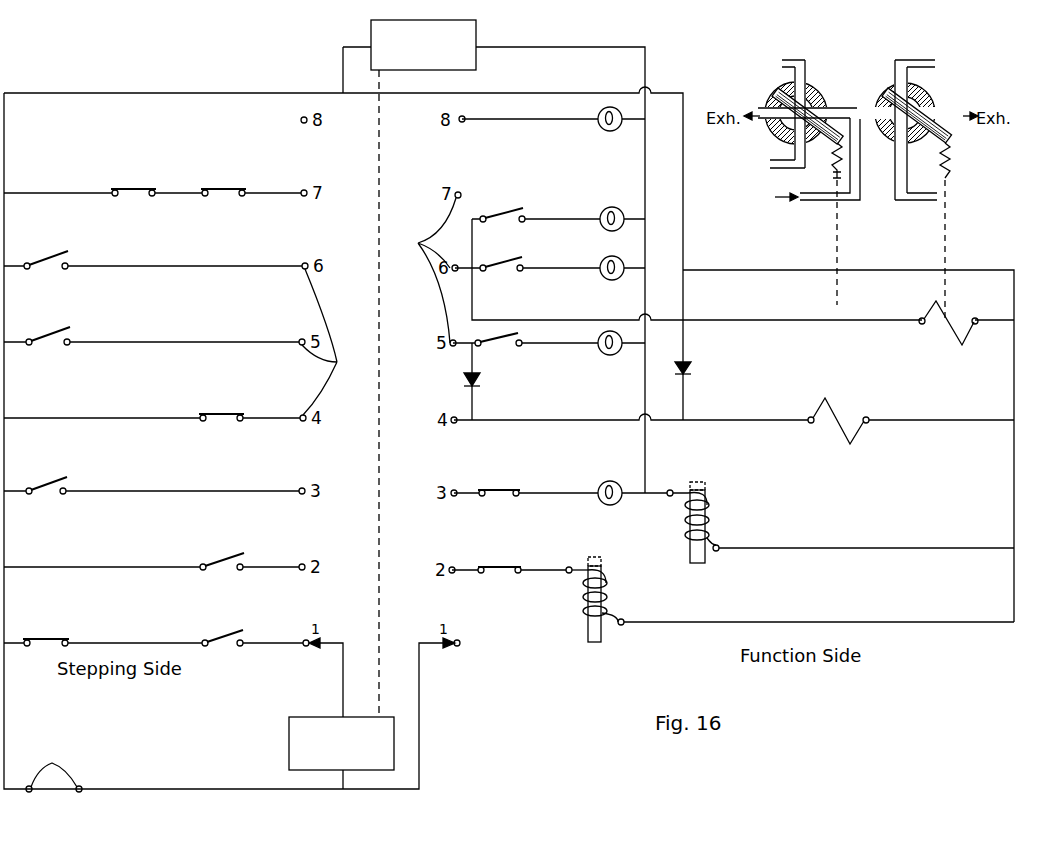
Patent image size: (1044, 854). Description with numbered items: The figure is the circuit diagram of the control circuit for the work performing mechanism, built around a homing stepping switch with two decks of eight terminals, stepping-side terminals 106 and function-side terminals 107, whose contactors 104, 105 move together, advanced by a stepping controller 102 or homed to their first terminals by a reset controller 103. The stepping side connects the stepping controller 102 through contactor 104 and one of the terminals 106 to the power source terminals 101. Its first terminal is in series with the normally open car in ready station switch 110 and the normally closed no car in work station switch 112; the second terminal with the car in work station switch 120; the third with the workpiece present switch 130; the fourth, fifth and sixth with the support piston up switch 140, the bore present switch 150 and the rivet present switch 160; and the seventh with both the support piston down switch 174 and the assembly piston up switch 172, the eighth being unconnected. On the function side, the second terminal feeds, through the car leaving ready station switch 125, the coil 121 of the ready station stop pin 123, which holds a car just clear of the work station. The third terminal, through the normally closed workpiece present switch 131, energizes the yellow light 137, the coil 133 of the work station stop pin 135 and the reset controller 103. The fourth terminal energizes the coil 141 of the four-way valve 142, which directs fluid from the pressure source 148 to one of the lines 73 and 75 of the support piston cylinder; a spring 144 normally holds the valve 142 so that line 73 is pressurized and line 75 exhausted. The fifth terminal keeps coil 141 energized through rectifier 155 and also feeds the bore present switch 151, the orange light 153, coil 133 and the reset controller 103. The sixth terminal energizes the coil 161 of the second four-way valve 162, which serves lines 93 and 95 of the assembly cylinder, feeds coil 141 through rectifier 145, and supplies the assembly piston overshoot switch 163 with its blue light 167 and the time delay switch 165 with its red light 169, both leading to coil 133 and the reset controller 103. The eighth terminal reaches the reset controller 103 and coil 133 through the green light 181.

The line 73 is at (782, 66).
The line 75 is at (775, 166).
The line 93 is at (935, 66).
The line 95 is at (937, 197).
The terminals 101 is at (54, 769).
The stepping controller 102 is at (328, 717).
The reset controller 103 is at (371, 40).
The contactor 104 is at (336, 637).
The contactor 105 is at (426, 642).
The terminals 106 is at (336, 342).
The terminals 107 is at (422, 270).
The car in ready station switch 110 is at (57, 636).
The no car in work station switch 112 is at (226, 637).
The car in work station switch 120 is at (224, 561).
The coil 121 is at (606, 597).
The ready station stop pin 123 is at (603, 638).
The car leaving ready station switch 125 is at (508, 566).
The workpiece present switch 130 is at (54, 483).
The workpiece present switch 131 is at (510, 490).
The work station stop pin coil 133 is at (708, 516).
The work station stop pin 135 is at (706, 562).
The yellow light 137 is at (611, 482).
The support piston up switch 140 is at (228, 413).
The coil 141 is at (810, 411).
The four-way valve 142 is at (780, 103).
The spring 144 is at (830, 173).
The rectifier 145 is at (692, 367).
The source 148 is at (822, 201).
The bore present switch 150 is at (56, 333).
The bore present switch 151 is at (517, 334).
The orange light 153 is at (624, 356).
The rectifier 155 is at (481, 379).
The rivet present switch 160 is at (56, 259).
The coil 161 is at (926, 309).
The four-way valve 162 is at (890, 92).
The assembly piston overshoot switch 163 is at (522, 261).
The time delay switch 165 is at (524, 212).
The blue light 167 is at (626, 250).
The red light 169 is at (611, 207).
The assembly piston up switch 172 is at (136, 189).
The support piston down switch 174 is at (232, 189).
The green light 181 is at (598, 115).